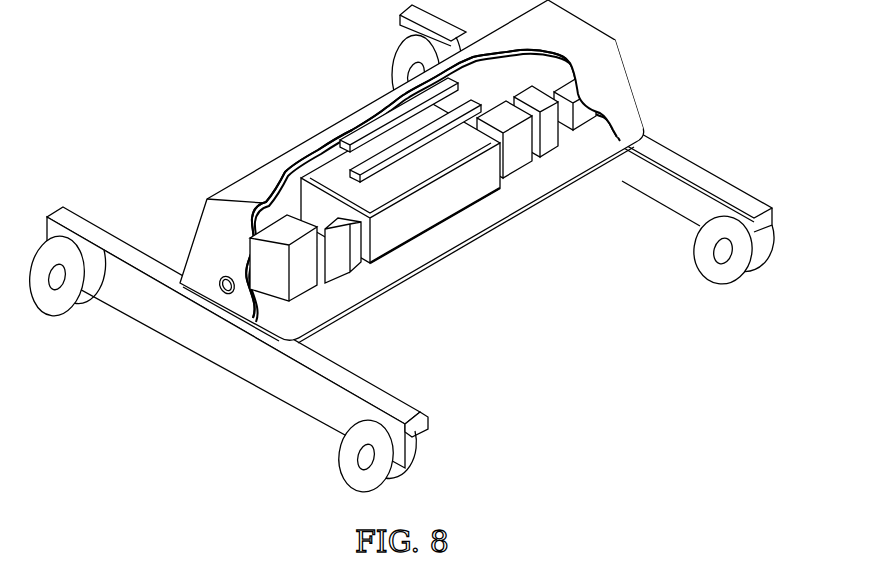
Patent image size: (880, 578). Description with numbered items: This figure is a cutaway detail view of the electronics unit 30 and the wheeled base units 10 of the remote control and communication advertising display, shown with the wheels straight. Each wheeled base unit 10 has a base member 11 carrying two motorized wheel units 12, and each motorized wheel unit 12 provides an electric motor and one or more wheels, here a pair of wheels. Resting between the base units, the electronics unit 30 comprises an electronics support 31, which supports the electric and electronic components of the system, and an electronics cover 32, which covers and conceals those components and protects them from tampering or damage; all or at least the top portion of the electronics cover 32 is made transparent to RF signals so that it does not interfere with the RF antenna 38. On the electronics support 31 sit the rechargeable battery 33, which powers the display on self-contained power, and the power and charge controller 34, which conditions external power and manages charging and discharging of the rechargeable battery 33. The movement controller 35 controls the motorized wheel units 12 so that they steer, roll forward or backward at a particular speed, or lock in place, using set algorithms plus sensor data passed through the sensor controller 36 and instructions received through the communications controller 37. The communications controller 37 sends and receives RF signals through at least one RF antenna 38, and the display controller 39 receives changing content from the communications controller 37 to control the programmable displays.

The wheeled base unit 10 is at (399, 261).
The base member 11 is at (306, 411).
The motorized wheel unit 12 is at (398, 48).
The electronics unit 30 is at (388, 176).
The electronics support 31 is at (407, 272).
The electronics cover 32 is at (261, 171).
The rechargeable battery 33 is at (462, 203).
The power and charge controller 34 is at (303, 291).
The movement controller 35 is at (337, 278).
The sensor controller 36 is at (520, 166).
The communications controller 37 is at (550, 147).
The RF antenna 38 is at (397, 113).
The display controller 39 is at (580, 128).